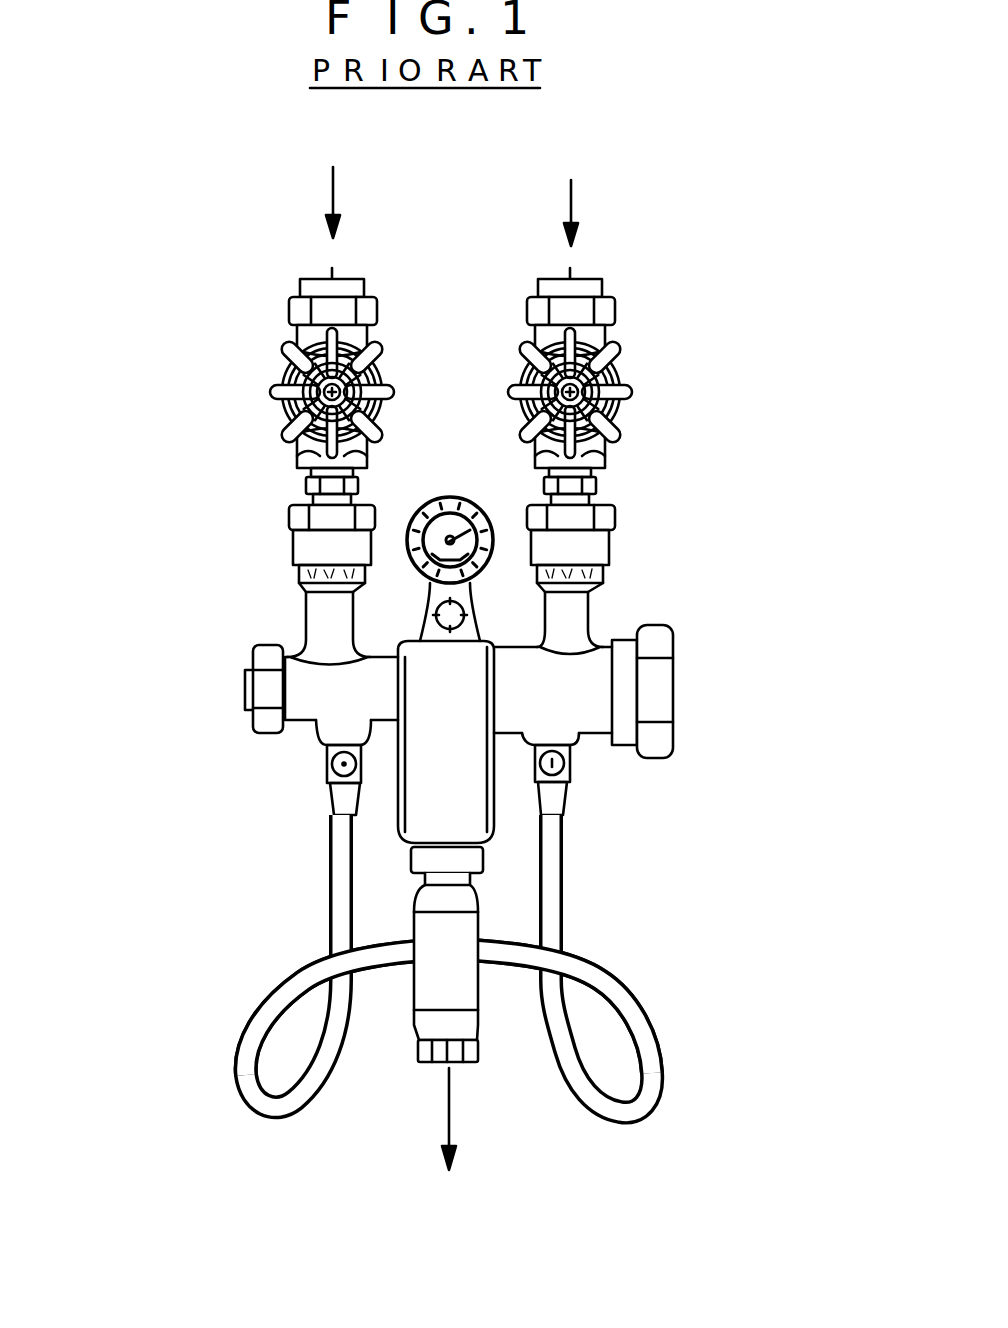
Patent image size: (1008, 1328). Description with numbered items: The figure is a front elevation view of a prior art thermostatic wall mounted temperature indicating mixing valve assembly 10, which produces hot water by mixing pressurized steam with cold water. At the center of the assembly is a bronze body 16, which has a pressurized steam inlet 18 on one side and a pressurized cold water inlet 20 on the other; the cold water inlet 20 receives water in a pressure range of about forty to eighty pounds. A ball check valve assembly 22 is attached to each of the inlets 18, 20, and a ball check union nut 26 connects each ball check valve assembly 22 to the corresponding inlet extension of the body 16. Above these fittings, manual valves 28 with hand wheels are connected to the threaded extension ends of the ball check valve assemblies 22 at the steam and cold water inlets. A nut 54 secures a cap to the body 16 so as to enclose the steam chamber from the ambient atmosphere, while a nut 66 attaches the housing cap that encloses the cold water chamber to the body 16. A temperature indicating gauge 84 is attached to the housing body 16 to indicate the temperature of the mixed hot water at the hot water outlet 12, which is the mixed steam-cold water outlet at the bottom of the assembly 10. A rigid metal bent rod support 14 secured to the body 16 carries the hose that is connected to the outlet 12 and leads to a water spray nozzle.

The thermostatic wall mounted temperature indicating mixing valve assembly 10 is at (515, 668).
The hot water outlet 12 is at (413, 1024).
The rigid metal bent rod support 14 is at (660, 1052).
The body 16 is at (437, 766).
The pressurized steam inlet 18 is at (320, 618).
The pressurized cold water inlet 20 is at (570, 625).
The ball check valve assembly 22 is at (298, 574).
The ball check union nut 26 is at (287, 520).
The manual valves 28 is at (272, 393).
The nut 54 is at (272, 692).
The nut 66 is at (673, 720).
The temperature indicating gauge 84 is at (451, 497).